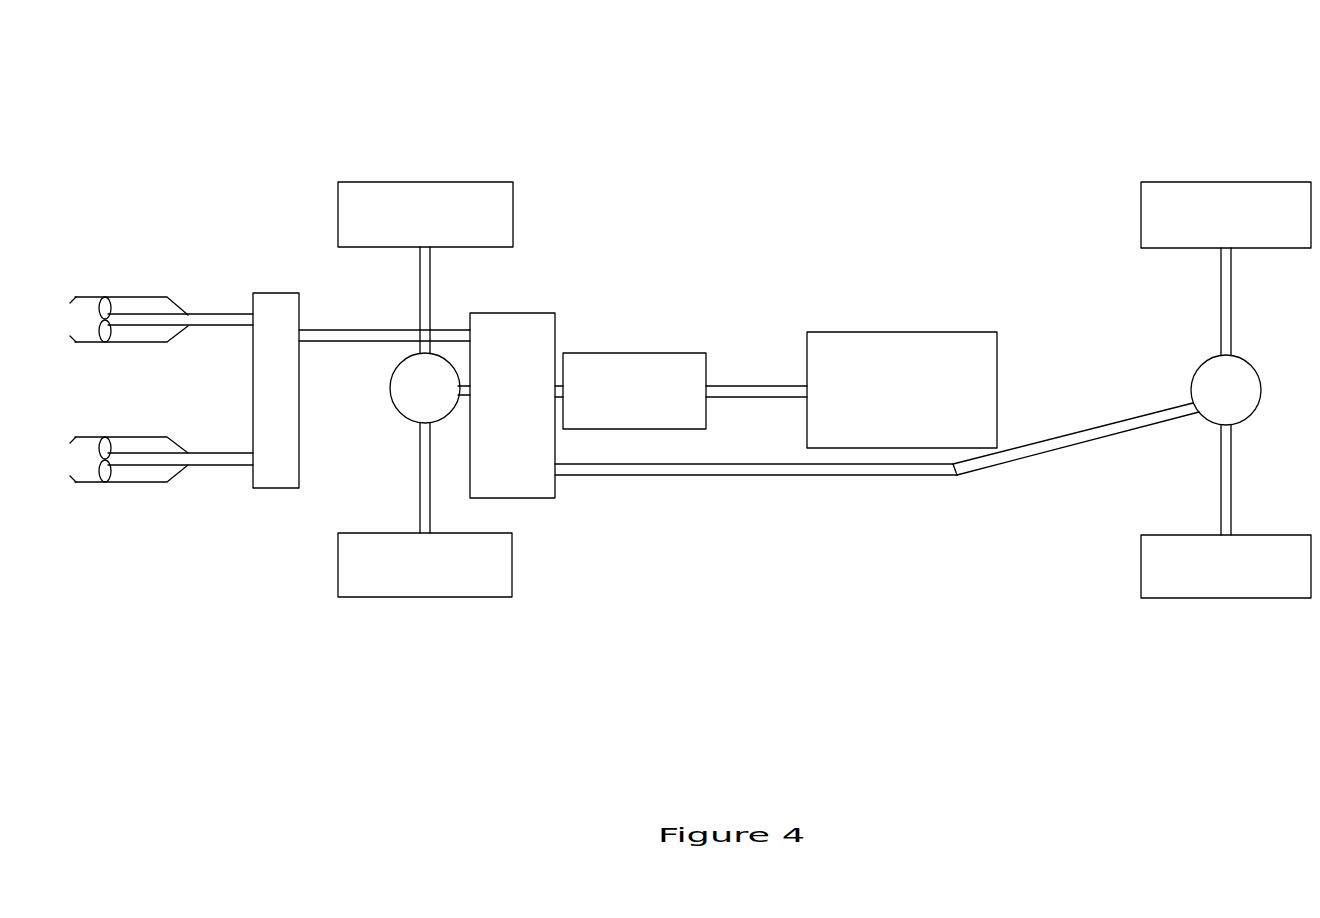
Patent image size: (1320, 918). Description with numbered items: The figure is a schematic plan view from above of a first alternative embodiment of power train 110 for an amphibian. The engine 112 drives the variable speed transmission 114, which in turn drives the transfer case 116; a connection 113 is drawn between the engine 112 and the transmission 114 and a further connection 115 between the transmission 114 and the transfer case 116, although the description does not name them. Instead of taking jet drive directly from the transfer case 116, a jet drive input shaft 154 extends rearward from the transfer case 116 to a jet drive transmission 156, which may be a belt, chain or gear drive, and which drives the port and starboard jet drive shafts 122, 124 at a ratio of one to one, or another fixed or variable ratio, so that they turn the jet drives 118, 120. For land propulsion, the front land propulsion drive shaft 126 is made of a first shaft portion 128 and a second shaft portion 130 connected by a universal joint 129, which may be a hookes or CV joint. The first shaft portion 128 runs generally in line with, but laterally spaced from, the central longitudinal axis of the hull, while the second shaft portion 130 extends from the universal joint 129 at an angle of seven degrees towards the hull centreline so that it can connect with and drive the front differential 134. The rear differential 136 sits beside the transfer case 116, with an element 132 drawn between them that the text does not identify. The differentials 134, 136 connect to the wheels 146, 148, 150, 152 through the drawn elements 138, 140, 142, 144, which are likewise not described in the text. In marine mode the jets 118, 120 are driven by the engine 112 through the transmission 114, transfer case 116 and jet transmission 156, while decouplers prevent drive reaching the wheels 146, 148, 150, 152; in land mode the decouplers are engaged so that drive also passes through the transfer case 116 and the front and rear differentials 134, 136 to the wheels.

The power train 110 is at (693, 152).
The engine 112 is at (912, 404).
The engine output shaft 113 is at (757, 395).
The variable speed transmission 114 is at (640, 407).
The coupling 115 is at (555, 358).
The transfer case 116 is at (526, 410).
The jet drive 118 is at (148, 303).
The jet drive 120 is at (145, 473).
The port jet drive shaft 122 is at (223, 317).
The starboard jet drive shaft 124 is at (222, 462).
The front land propulsion drive shaft 126 is at (877, 497).
The first shaft portion 128 is at (745, 473).
The universal joint 129 is at (957, 471).
The second shaft portion 130 is at (1102, 426).
The coupling 132 is at (466, 389).
The front differential 134 is at (1246, 404).
The rear differential 136 is at (438, 402).
The rear axle shaft 138 is at (1232, 322).
The rear axle shaft 140 is at (1232, 500).
The front axle shaft 142 is at (431, 302).
The front axle shaft 144 is at (420, 506).
The wheel 146 is at (1238, 228).
The wheel 148 is at (1238, 581).
The wheel 150 is at (436, 227).
The wheel 152 is at (436, 581).
The jet drive input shaft 154 is at (346, 338).
The jet drive transmission 156 is at (292, 401).